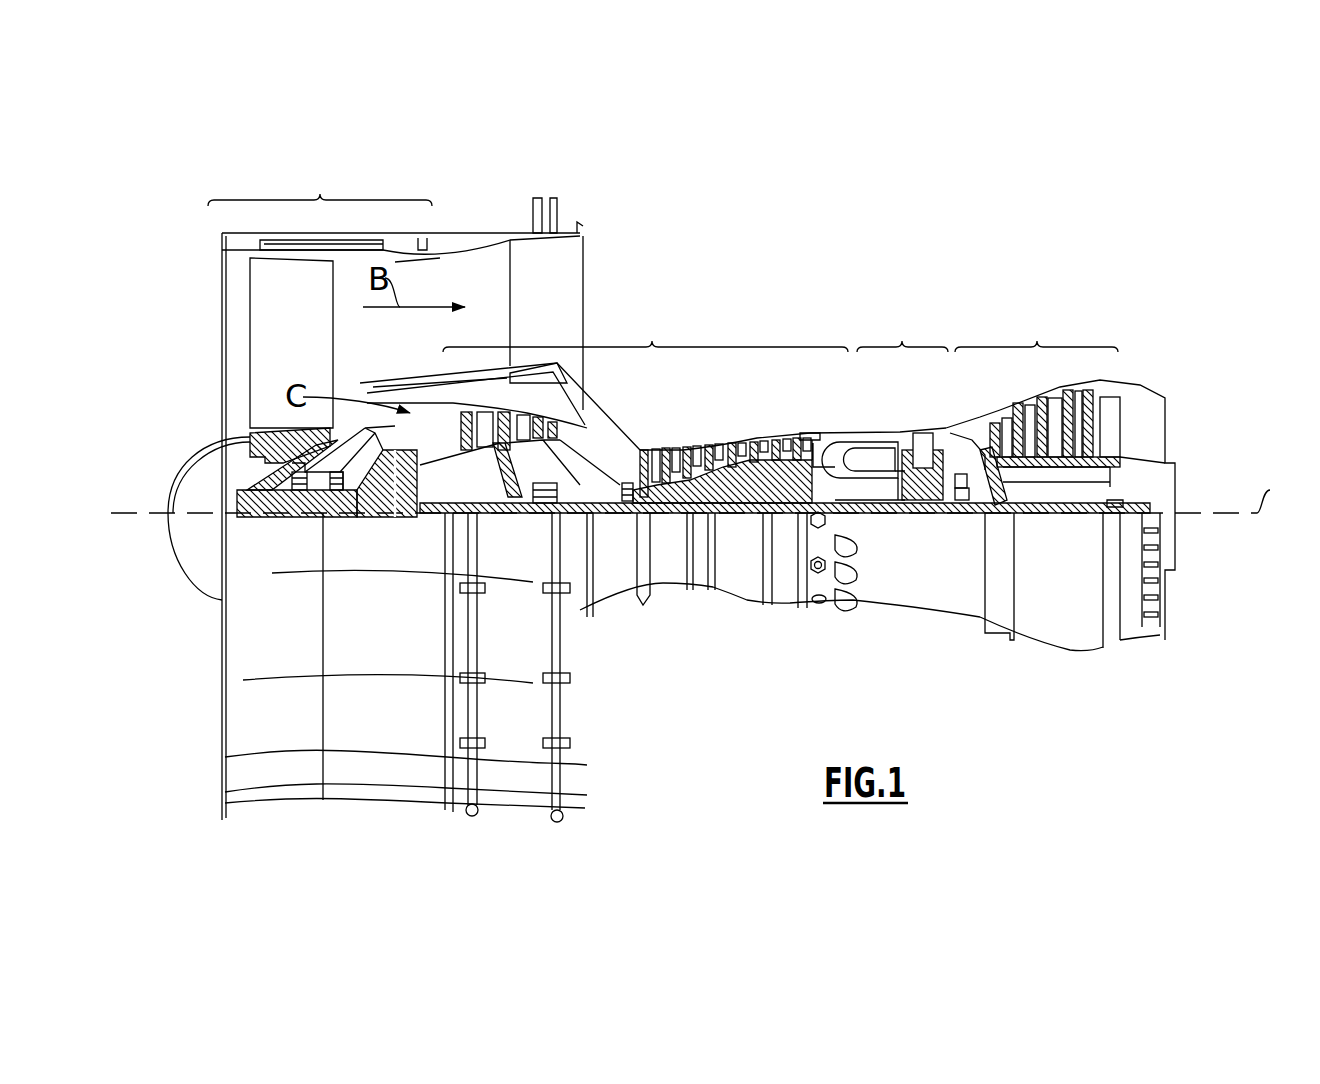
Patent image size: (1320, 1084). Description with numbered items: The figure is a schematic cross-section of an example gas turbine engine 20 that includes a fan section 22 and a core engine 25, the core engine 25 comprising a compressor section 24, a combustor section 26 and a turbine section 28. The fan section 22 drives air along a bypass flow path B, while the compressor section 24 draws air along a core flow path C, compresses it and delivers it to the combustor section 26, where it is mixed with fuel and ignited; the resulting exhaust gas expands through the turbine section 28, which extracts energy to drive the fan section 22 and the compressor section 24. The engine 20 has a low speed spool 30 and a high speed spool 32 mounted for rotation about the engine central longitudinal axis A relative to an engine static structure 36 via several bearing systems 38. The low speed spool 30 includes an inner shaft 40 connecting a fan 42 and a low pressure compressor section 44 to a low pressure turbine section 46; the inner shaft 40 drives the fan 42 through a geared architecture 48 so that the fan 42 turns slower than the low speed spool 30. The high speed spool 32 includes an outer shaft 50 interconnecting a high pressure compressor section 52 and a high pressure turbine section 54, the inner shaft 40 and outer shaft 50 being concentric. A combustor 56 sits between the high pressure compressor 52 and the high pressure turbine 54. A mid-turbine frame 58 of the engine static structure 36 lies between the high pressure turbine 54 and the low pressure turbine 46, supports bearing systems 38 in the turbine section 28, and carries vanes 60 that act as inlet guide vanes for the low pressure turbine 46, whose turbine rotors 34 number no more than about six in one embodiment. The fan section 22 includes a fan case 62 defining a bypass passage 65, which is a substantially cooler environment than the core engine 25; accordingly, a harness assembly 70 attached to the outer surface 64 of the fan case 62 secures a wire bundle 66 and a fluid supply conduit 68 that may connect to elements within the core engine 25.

The gas turbine engine 20 is at (862, 283).
The fan section 22 is at (320, 181).
The compressor section 24 is at (645, 326).
The core engine 25 is at (738, 422).
The combustor section 26 is at (902, 326).
The turbine section 28 is at (1036, 326).
The low speed spool 30 is at (743, 522).
The high speed spool 32 is at (780, 483).
The turbine rotors 34 is at (1057, 513).
The engine static structure 36 is at (783, 600).
The bearing systems 38 is at (303, 488).
The inner shaft 40 is at (603, 515).
The fan 42 is at (307, 364).
The low pressure compressor section 44 is at (520, 418).
The low pressure turbine section 46 is at (1050, 440).
The geared architecture 48 is at (410, 500).
The outer shaft 50 is at (870, 508).
The high pressure compressor section 52 is at (717, 483).
The high pressure turbine section 54 is at (920, 433).
The combustor 56 is at (857, 457).
The mid-turbine frame 58 is at (967, 418).
The vanes 60 is at (1000, 510).
The fan case 62 is at (433, 250).
The outer surface 64 is at (332, 233).
The bypass passage 65 is at (442, 264).
The wire bundle 66 is at (462, 648).
The fluid supply conduit 68 is at (570, 712).
The harness assembly 70 is at (543, 588).